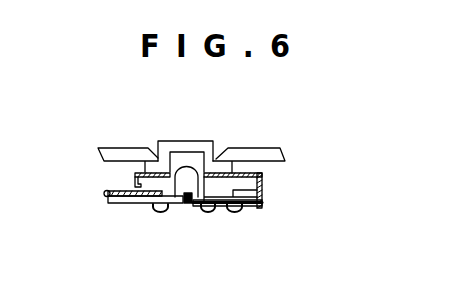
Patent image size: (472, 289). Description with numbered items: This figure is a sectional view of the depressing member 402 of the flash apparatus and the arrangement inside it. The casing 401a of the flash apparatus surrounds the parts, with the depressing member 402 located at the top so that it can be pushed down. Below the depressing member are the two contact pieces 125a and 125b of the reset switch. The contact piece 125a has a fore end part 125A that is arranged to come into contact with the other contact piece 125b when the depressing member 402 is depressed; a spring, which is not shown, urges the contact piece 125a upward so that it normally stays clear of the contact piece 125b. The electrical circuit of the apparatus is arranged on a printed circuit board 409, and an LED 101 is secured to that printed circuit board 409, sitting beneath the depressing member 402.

The depressing member 402 is at (196, 141).
The casing 401a is at (268, 147).
The fore end part 125A is at (135, 180).
The contact piece 125a is at (262, 193).
The contact piece 125b is at (108, 195).
The printed circuit board 409 is at (143, 203).
The LED 101 is at (186, 203).